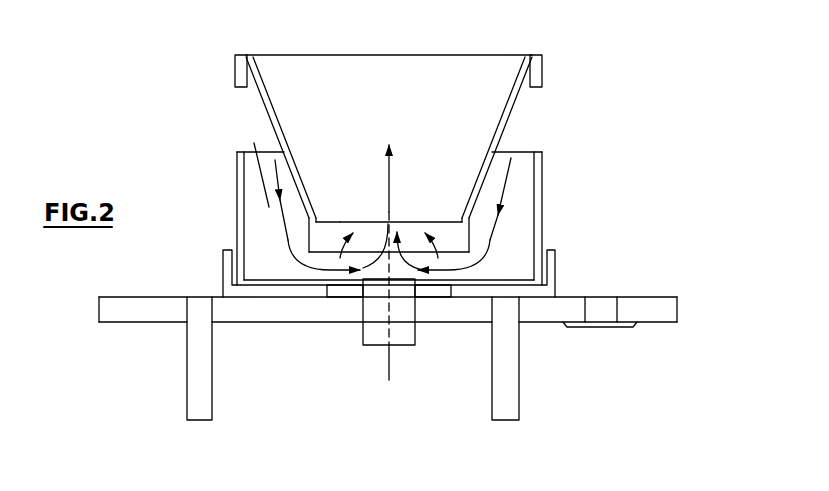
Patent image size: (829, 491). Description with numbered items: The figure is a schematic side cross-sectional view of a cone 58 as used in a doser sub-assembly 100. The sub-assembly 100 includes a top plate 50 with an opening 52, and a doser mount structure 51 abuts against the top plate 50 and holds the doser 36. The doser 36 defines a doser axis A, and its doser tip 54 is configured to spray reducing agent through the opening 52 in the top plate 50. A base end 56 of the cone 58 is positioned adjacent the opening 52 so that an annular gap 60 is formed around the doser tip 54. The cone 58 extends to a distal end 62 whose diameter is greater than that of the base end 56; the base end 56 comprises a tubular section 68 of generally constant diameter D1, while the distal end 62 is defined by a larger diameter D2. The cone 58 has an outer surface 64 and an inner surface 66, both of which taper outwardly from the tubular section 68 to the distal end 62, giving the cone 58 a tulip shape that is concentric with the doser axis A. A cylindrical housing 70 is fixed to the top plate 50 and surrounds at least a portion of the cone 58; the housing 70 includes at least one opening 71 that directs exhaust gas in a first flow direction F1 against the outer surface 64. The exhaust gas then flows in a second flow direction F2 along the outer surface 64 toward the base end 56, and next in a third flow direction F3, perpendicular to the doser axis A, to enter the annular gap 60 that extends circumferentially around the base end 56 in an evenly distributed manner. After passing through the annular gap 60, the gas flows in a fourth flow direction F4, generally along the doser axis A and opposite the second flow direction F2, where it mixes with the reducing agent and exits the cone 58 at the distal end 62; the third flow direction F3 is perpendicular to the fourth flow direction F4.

The doser sub-assembly 100 is at (622, 268).
The doser 36 is at (363, 341).
The top plate 50 is at (543, 290).
The doser mount structure 51 is at (155, 316).
The opening 52 is at (427, 290).
The doser tip 54 is at (383, 323).
The base end 56 is at (468, 228).
The cone 58 is at (398, 129).
The annular gap 60 is at (300, 273).
The distal end 62 is at (531, 55).
The outer surface 64 is at (269, 117).
The inner surface 66 is at (267, 100).
The tubular section 68 is at (315, 240).
The cylindrical housing 70 is at (426, 214).
The opening 71 is at (232, 143).
The doser axis A is at (392, 370).
The diameter of tubular section D1 is at (507, 240).
The diameter of distal end D2 is at (567, 62).
The first flow direction F1 is at (253, 101).
The second flow direction F2 is at (279, 183).
The third flow direction F3 is at (338, 282).
The fourth flow direction F4 is at (390, 173).